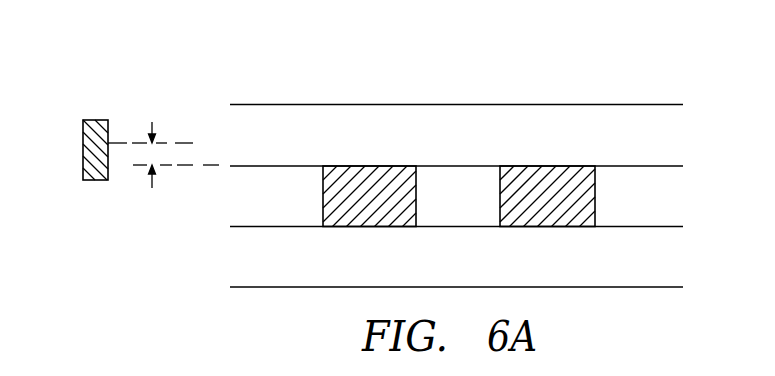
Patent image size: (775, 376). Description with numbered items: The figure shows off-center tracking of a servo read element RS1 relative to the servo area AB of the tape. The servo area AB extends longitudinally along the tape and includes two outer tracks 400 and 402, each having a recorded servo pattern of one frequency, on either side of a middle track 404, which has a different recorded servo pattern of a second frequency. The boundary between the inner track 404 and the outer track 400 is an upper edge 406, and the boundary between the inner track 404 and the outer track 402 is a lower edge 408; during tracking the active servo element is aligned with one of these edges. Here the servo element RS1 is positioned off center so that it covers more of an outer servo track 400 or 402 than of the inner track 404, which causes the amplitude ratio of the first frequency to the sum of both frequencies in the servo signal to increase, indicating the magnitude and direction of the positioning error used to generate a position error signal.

The outer track 400 is at (675, 135).
The outer track 402 is at (675, 258).
The middle track 404 is at (675, 198).
The upper edge 406 is at (277, 164).
The lower edge 408 is at (277, 227).
The servo area AB is at (607, 95).
The servo read element RS1 is at (83, 148).